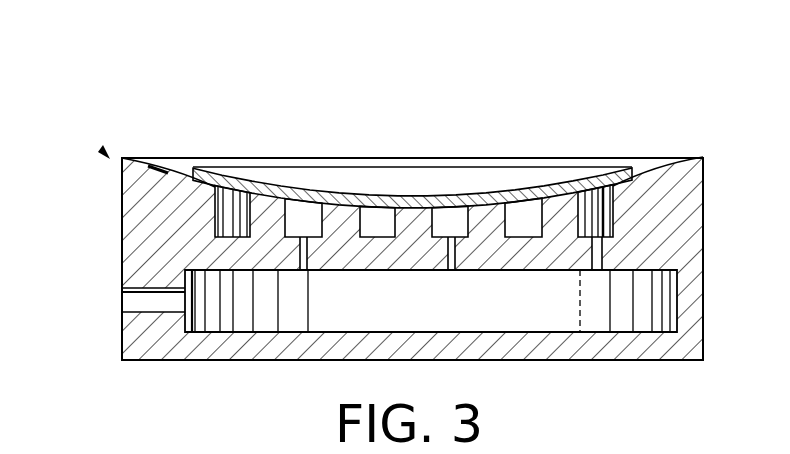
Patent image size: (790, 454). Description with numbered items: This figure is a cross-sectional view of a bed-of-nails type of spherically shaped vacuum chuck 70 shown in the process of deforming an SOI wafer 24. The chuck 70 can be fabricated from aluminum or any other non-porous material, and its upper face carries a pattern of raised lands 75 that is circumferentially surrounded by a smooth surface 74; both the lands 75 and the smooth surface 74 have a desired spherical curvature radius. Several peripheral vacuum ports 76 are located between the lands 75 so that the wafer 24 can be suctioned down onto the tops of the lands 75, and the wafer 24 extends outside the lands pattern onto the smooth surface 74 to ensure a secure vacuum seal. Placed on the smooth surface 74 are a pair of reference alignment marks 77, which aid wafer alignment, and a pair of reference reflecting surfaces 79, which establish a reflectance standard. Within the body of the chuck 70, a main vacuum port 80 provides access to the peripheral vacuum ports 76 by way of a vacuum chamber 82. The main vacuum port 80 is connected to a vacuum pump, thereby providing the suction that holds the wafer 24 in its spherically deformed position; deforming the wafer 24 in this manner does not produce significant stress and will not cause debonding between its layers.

The spherically shaped vacuum chuck 70 is at (108, 156).
The smooth surface 74 is at (180, 163).
The reference reflecting surfaces 79 is at (160, 167).
The reference alignment marks 77 is at (667, 167).
The SOI wafer 24 is at (627, 177).
The raised lands 75 is at (338, 208).
The peripheral vacuum ports 76 is at (450, 208).
The main vacuum port 80 is at (127, 303).
The vacuum chamber 82 is at (637, 292).